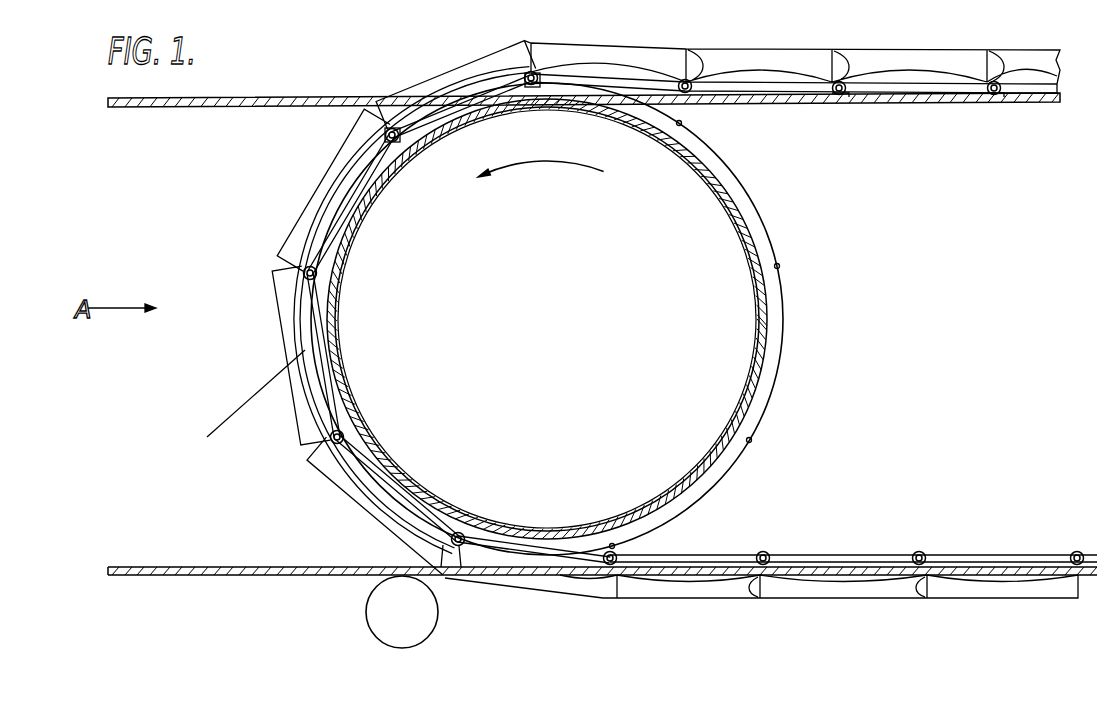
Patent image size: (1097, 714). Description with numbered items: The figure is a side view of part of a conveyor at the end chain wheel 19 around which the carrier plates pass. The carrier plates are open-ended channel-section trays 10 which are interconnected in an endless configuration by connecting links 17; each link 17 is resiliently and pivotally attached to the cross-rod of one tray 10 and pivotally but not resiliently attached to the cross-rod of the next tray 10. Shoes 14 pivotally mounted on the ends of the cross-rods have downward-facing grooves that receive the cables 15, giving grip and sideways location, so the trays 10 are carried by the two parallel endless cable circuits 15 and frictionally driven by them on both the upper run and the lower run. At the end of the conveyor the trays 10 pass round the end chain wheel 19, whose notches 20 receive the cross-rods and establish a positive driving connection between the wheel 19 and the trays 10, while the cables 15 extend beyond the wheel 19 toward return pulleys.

The tray 10 is at (540, 37).
The shoe 14 is at (847, 93).
The cable 15 is at (164, 108).
The connecting link 17 is at (799, 85).
The end chain wheel 19 is at (760, 397).
The notch 20 is at (743, 440).